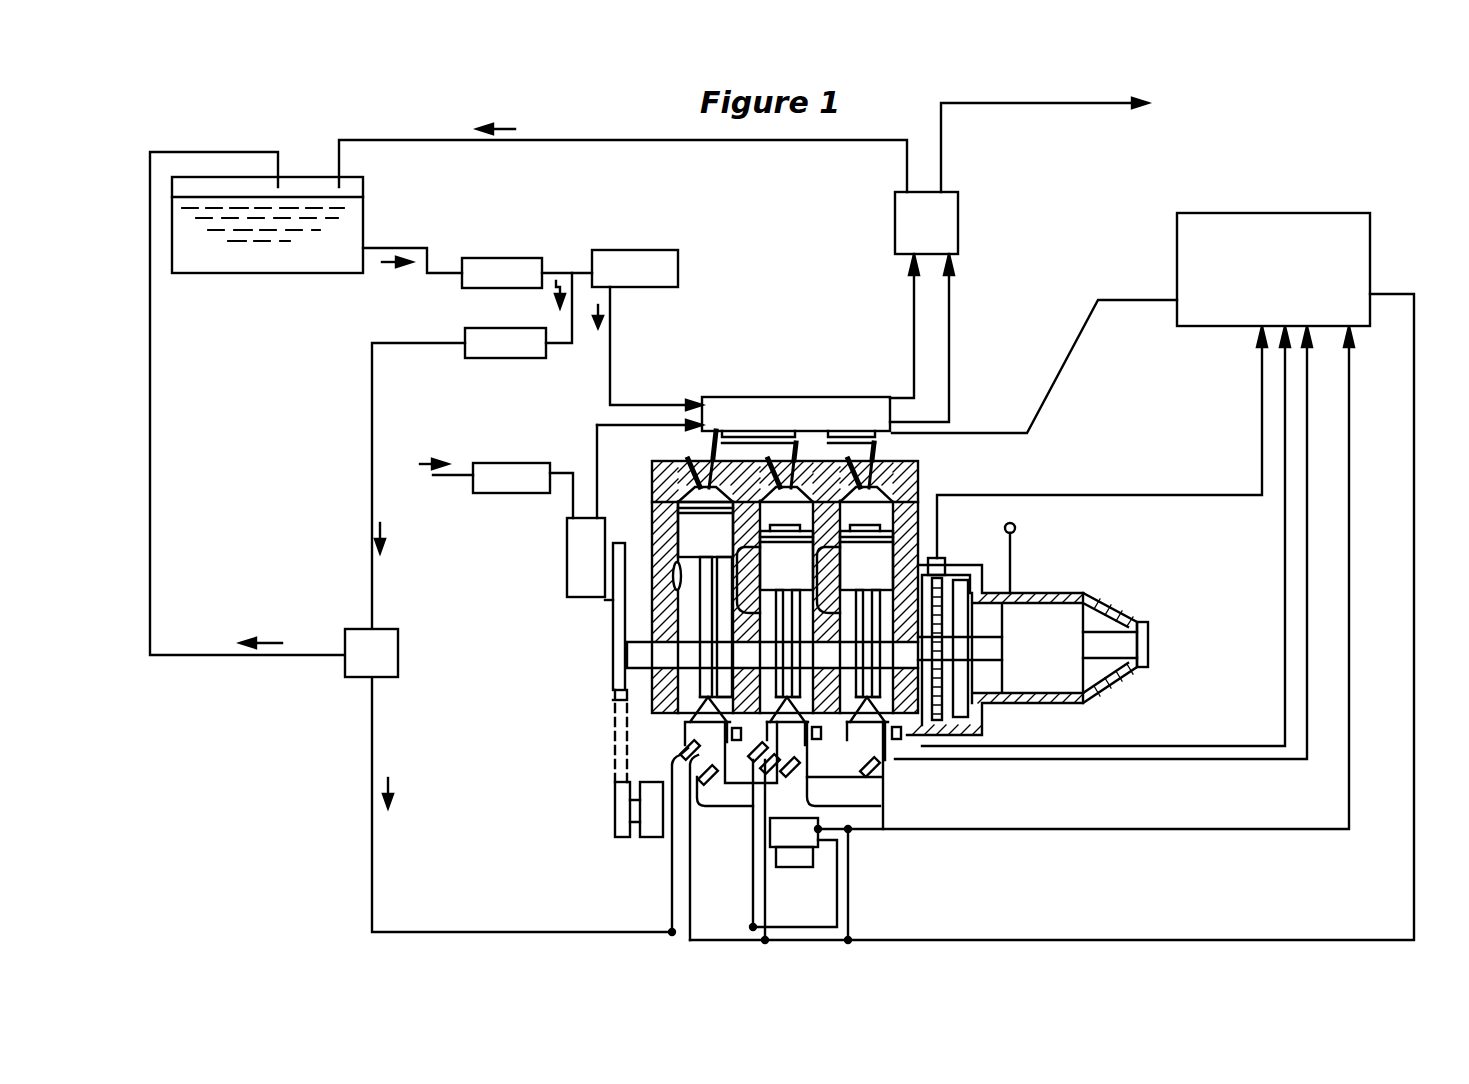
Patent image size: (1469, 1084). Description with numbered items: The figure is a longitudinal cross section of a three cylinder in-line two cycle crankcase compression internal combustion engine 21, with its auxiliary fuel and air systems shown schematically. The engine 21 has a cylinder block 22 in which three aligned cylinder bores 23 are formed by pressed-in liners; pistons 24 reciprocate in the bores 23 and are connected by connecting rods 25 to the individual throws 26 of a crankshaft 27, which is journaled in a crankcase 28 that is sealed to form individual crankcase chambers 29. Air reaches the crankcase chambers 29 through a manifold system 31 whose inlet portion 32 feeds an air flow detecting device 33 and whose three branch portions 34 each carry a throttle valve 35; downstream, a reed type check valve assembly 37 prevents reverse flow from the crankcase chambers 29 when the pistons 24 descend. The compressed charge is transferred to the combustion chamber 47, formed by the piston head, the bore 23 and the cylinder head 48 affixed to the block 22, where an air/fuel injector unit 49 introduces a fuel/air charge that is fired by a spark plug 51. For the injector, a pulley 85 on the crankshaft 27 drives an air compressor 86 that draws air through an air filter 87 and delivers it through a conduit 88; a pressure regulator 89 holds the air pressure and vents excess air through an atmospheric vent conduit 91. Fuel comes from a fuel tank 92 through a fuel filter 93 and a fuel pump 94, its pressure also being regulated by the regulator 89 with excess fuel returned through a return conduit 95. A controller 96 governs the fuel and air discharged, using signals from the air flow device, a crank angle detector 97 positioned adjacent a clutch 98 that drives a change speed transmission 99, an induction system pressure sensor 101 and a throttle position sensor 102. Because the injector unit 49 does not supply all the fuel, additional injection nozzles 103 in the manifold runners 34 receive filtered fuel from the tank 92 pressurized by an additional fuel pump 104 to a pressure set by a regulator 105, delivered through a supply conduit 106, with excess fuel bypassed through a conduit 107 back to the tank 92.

The internal combustion engine 21 is at (1023, 477).
The cylinder block 22 is at (660, 520).
The cylinder bores 23 is at (613, 602).
The pistons 24 is at (690, 540).
The connecting rods 25 is at (700, 576).
The throws 26 is at (632, 645).
The crankshaft 27 is at (615, 705).
The crankcase 28 is at (616, 720).
The crankcase chambers 29 is at (690, 715).
The manifold system 31 is at (893, 805).
The inlet portion 32 is at (812, 862).
The air flow detecting device 33 is at (820, 840).
The branch portions 34 is at (893, 770).
The throttle valves 35 is at (715, 780).
The reed type check valve assembly 37 is at (700, 745).
The combustion chamber 47 is at (688, 405).
The cylinder head 48 is at (656, 485).
The air/fuel injector unit 49 is at (714, 440).
The spark plug 51 is at (708, 470).
The pulley 85 is at (613, 680).
The air compressor 86 is at (567, 535).
The air filter 87 is at (507, 493).
The conduit 88 is at (597, 437).
The pressure regulator 89 is at (895, 228).
The atmospheric vent conduit 91 is at (1020, 103).
The fuel tank 92 is at (310, 273).
The fuel filter 93 is at (498, 258).
The fuel pump 94 is at (644, 250).
The return conduit 95 is at (624, 140).
The controller 96 is at (1237, 213).
The crank angle detector 97 is at (935, 556).
The clutch 98 is at (960, 590).
The change speed transmission 99 is at (1057, 603).
The induction system pressure sensor 101 is at (753, 770).
The throttle position sensor 102 is at (887, 802).
The additional injection nozzles 103 is at (630, 778).
The additional fuel pump 104 is at (508, 358).
The regulator 105 is at (353, 629).
The supply conduit 106 is at (372, 715).
The conduit 107 is at (153, 530).